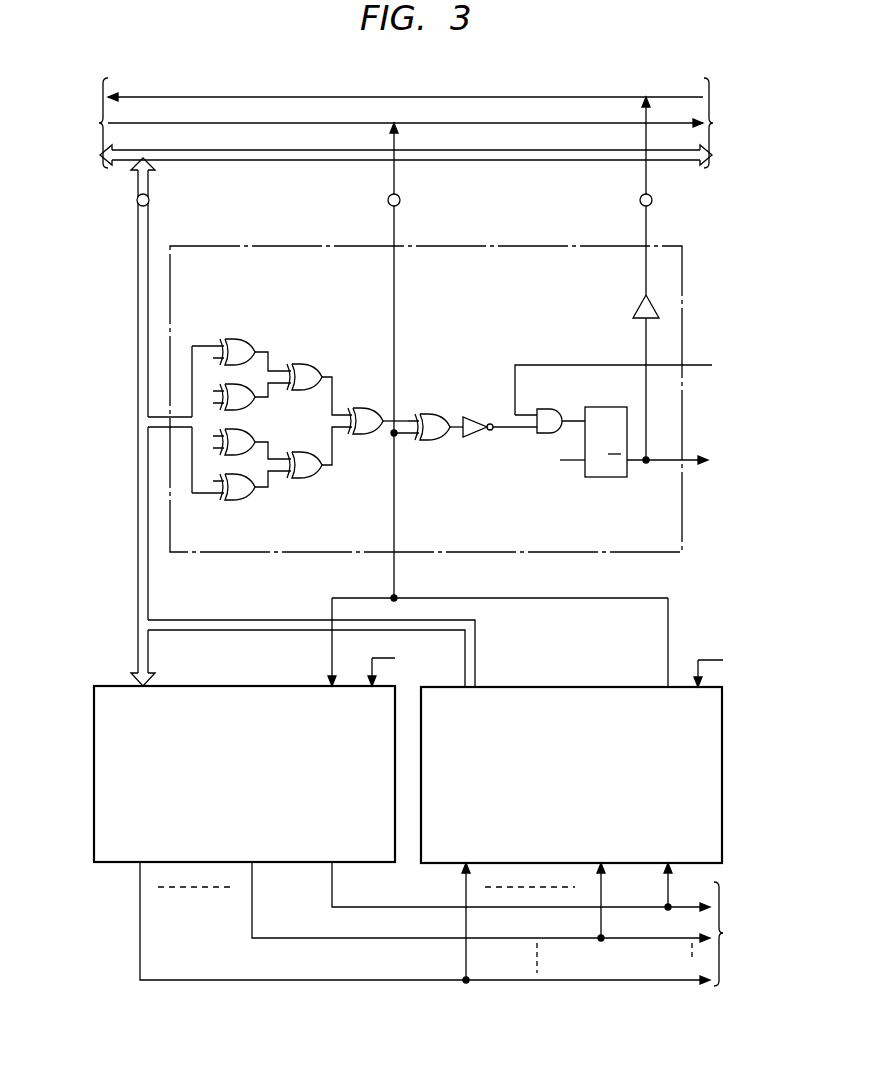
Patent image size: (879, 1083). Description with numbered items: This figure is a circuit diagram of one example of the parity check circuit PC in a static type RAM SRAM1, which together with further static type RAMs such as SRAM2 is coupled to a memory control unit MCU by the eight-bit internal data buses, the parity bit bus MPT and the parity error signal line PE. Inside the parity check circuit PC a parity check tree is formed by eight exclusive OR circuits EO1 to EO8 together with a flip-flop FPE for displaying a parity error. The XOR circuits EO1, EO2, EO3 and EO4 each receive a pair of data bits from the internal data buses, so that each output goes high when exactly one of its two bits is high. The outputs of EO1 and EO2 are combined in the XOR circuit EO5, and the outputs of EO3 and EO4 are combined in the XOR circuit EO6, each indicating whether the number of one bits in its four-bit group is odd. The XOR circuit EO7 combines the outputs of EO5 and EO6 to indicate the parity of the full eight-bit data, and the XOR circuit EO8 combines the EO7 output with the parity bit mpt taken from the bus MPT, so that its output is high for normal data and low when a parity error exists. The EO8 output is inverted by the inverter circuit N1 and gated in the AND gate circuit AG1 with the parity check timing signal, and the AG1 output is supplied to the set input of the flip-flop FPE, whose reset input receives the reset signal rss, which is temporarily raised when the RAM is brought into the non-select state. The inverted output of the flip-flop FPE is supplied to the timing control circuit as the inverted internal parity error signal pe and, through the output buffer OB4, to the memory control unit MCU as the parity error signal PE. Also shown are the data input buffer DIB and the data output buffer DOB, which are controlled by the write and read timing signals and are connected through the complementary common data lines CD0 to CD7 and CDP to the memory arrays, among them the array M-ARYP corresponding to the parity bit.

The memory control unit MCU is at (82, 123).
The static type RAM SRAM2 is at (739, 123).
The parity error signal PE is at (143, 75).
The parity bit internal data bus MPT is at (405, 115).
The static type RAM SRAM1 is at (287, 224).
The parity check circuit PC is at (297, 301).
The exclusive OR circuit EO1 is at (236, 347).
The exclusive OR circuit EO2 is at (246, 389).
The exclusive OR circuit EO3 is at (246, 436).
The exclusive OR circuit EO4 is at (236, 479).
The exclusive OR circuit EO5 is at (310, 381).
The exclusive OR circuit EO6 is at (310, 452).
The exclusive OR circuit EO7 is at (374, 413).
The exclusive OR circuit EO8 is at (427, 418).
The inverter circuit N1 is at (500, 417).
The AND gate circuit AG1 is at (550, 412).
The flip-flop FPE is at (606, 432).
The reset signal rss is at (558, 459).
The inverted internal parity error signal pe is at (733, 453).
The output buffer OB4 is at (629, 278).
The parity bit signal mpt is at (498, 405).
The data input buffer DIB is at (244, 774).
The data output buffer DOB is at (571, 775).
The complementary common data line CDP is at (521, 886).
The complementary common data line CD7 is at (481, 902).
The complementary common data line CD0 is at (425, 923).
The memory array M-ARYP is at (748, 934).